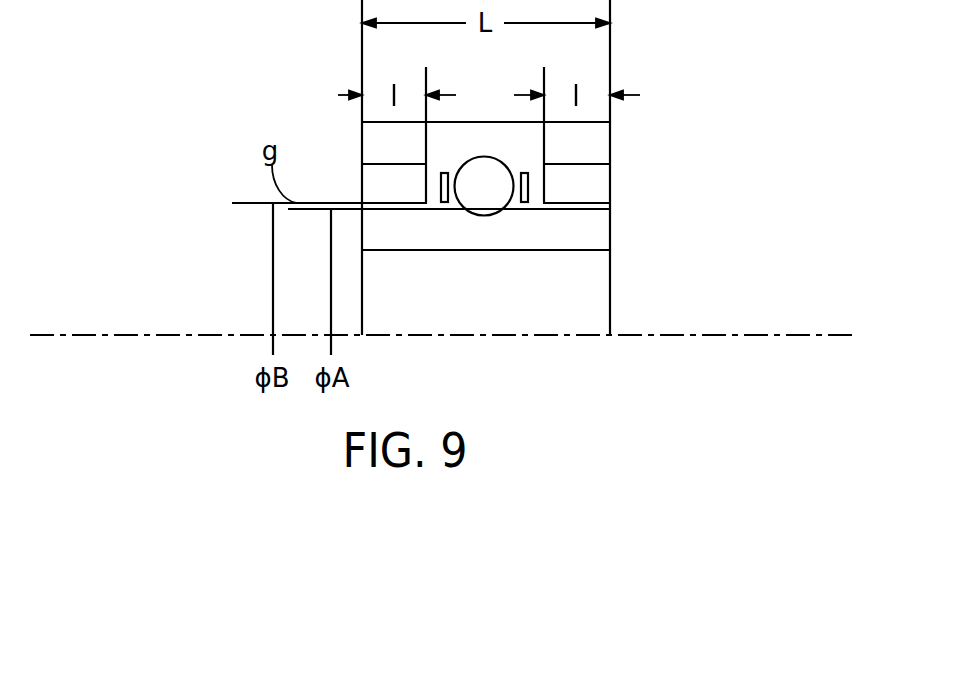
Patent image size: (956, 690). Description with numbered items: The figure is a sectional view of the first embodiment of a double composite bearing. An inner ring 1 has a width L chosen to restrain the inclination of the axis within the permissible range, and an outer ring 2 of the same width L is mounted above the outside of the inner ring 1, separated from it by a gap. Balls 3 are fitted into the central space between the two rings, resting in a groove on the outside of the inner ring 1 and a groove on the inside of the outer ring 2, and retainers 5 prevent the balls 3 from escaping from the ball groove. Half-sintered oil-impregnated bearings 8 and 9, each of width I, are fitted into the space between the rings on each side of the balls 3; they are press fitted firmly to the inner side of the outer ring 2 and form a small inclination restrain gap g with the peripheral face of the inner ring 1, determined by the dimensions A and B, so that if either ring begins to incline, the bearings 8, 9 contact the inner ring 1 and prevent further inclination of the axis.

The inner ring 1 is at (597, 244).
The outer ring 2 is at (600, 143).
The balls 3 is at (483, 207).
The retainers 5 is at (524, 190).
The half-sintered oil-impregnated bearing 8 is at (370, 183).
The half-sintered oil-impregnated bearing 9 is at (597, 183).